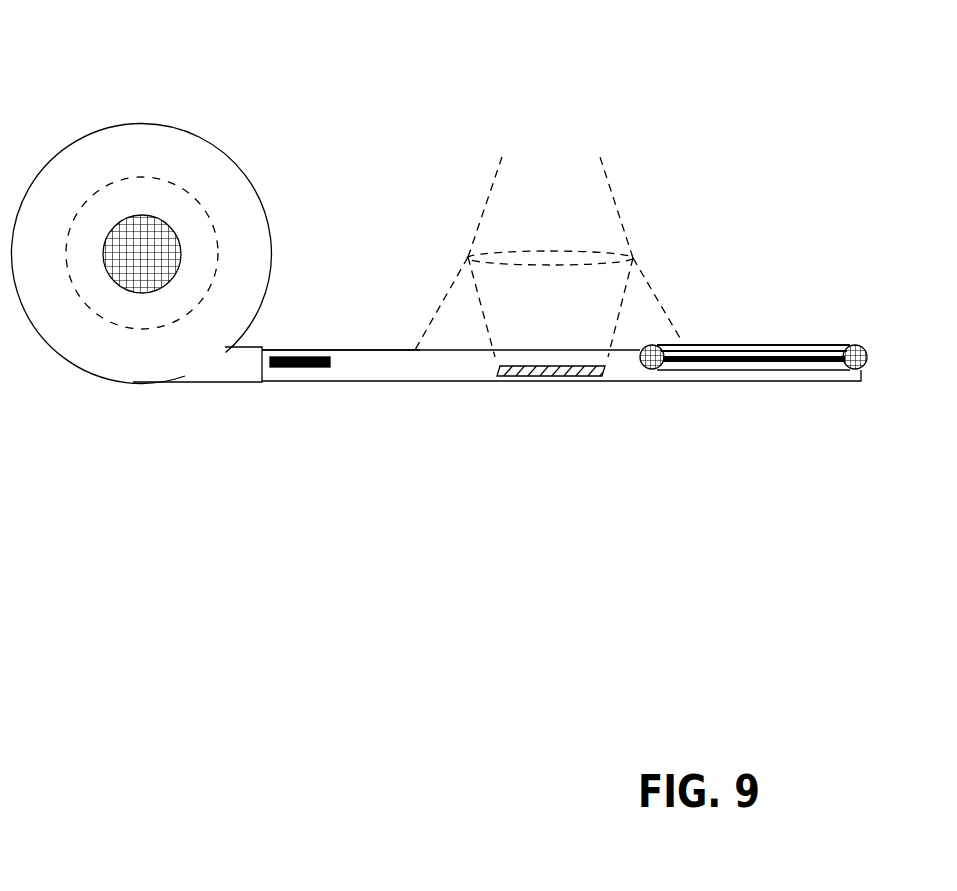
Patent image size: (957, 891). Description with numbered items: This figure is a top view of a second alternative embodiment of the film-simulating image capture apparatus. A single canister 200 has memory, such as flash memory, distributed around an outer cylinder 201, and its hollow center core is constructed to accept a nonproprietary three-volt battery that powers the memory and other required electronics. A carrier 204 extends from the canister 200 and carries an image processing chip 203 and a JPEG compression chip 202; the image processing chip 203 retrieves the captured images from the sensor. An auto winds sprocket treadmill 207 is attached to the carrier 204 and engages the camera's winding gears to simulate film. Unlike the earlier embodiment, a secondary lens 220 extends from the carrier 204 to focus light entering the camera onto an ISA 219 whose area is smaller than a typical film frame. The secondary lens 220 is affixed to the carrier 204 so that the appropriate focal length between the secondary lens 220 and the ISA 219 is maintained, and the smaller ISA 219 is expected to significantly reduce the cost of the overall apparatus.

The canister 200 is at (141, 287).
The outer cylinder 201 is at (52, 338).
The JPEG compression chip 202 is at (123, 182).
The image processing chip 203 is at (300, 353).
The carrier 204 is at (337, 349).
The auto winds sprocket treadmill 207 is at (707, 377).
The ISA 219 is at (548, 378).
The secondary lens 220 is at (553, 245).